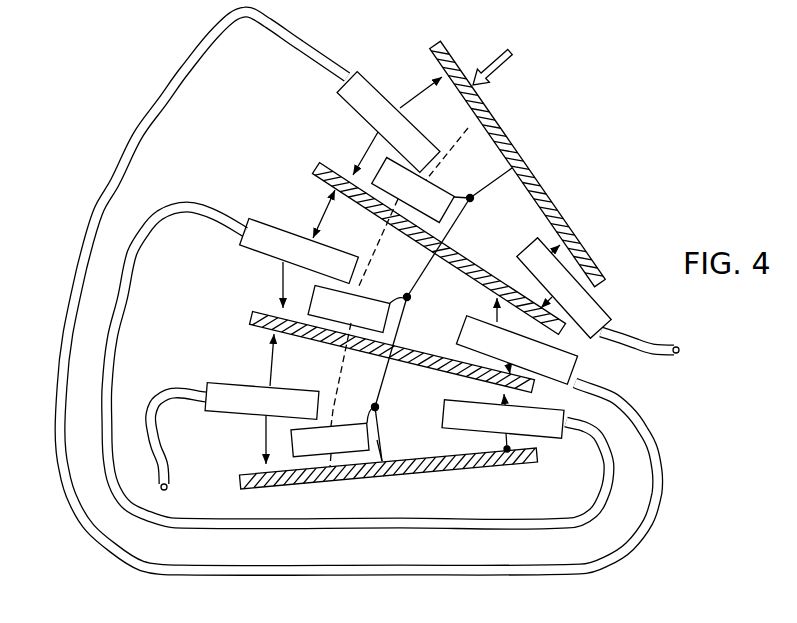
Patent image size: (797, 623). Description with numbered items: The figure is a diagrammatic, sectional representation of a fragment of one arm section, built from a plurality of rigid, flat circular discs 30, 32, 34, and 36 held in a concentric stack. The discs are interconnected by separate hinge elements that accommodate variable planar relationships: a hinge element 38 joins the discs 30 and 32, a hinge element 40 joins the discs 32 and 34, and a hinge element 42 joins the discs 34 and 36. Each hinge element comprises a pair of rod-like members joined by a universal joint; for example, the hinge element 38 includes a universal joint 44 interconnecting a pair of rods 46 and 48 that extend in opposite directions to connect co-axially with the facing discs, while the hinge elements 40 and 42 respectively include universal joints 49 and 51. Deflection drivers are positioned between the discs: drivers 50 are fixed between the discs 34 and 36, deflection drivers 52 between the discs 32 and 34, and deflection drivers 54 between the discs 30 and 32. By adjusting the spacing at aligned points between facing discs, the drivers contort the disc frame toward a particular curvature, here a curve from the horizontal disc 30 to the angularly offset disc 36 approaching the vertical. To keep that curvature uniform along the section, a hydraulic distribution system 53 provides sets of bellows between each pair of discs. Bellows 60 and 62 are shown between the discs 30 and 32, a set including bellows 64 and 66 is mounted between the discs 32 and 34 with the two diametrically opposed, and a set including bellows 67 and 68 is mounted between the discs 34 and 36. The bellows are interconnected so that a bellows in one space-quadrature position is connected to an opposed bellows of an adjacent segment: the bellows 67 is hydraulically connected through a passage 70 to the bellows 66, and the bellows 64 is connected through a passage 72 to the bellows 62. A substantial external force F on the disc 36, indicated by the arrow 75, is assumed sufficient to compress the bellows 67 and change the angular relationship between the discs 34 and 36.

The disc 30 is at (428, 471).
The disc 32 is at (416, 362).
The disc 34 is at (464, 258).
The disc 36 is at (571, 212).
The hinge element 38 is at (380, 426).
The hinge element 40 is at (402, 316).
The hinge element 42 is at (500, 177).
The universal joint 44 is at (371, 407).
The rod 46 is at (378, 407).
The rod 48 is at (384, 448).
The universal joint 49 is at (410, 298).
The deflection drivers 50 is at (388, 163).
The universal joint 51 is at (468, 196).
The deflection drivers 52 is at (379, 296).
The hydraulic distribution system 53 is at (86, 204).
The deflection drivers 54 is at (292, 442).
The bellows 60 is at (229, 383).
The bellows 62 is at (563, 411).
The bellows 64 is at (266, 214).
The bellows 66 is at (584, 364).
The bellows 67 is at (372, 78).
The bellows 68 is at (604, 302).
The passage 70 is at (157, 101).
The passage 72 is at (133, 283).
The arrow 75 is at (508, 54).